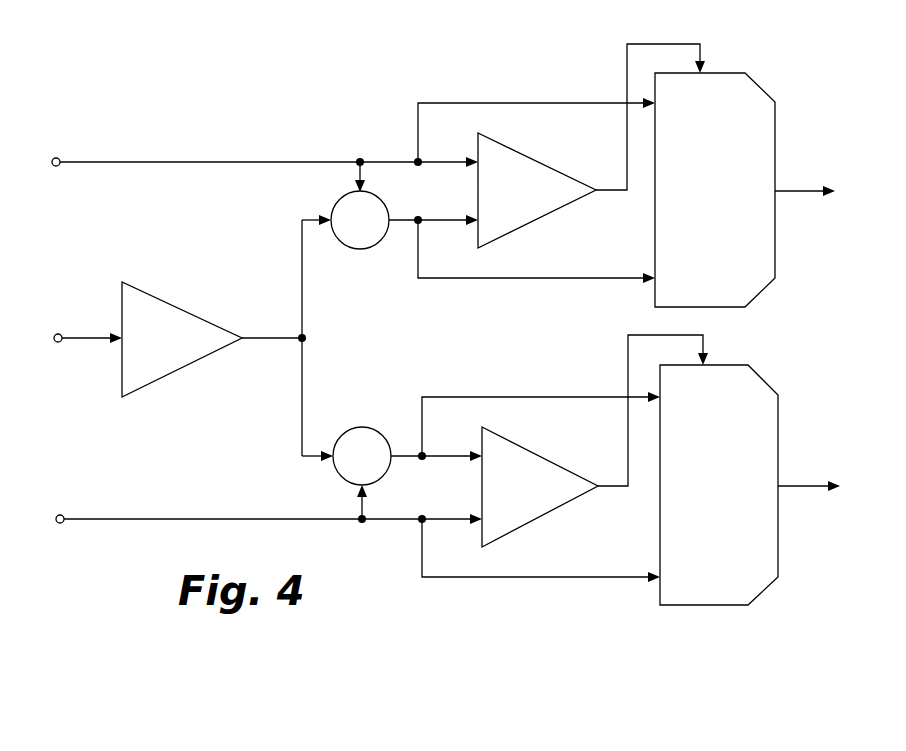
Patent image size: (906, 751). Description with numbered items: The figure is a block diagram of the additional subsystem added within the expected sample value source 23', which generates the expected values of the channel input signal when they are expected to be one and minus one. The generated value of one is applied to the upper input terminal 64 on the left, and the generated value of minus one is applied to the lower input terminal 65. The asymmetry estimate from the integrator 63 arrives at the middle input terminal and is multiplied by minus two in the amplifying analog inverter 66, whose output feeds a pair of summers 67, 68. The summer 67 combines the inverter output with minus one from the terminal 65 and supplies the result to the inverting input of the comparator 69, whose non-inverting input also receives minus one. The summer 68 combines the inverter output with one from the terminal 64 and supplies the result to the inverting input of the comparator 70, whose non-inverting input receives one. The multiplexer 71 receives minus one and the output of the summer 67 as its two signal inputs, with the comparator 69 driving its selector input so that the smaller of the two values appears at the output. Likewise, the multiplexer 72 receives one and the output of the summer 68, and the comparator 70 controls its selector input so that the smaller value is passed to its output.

The expected sample value source 23' is at (446, 324).
The integrator 63 is at (60, 336).
The upper input terminal 64 is at (59, 160).
The lower input terminal 65 is at (62, 517).
The amplifying analog inverter 66 is at (185, 309).
The summer 67 is at (357, 427).
The summer 68 is at (345, 248).
The comparator 69 is at (527, 445).
The comparator 70 is at (532, 154).
The multiplexer 71 is at (760, 373).
The multiplexer 72 is at (758, 84).